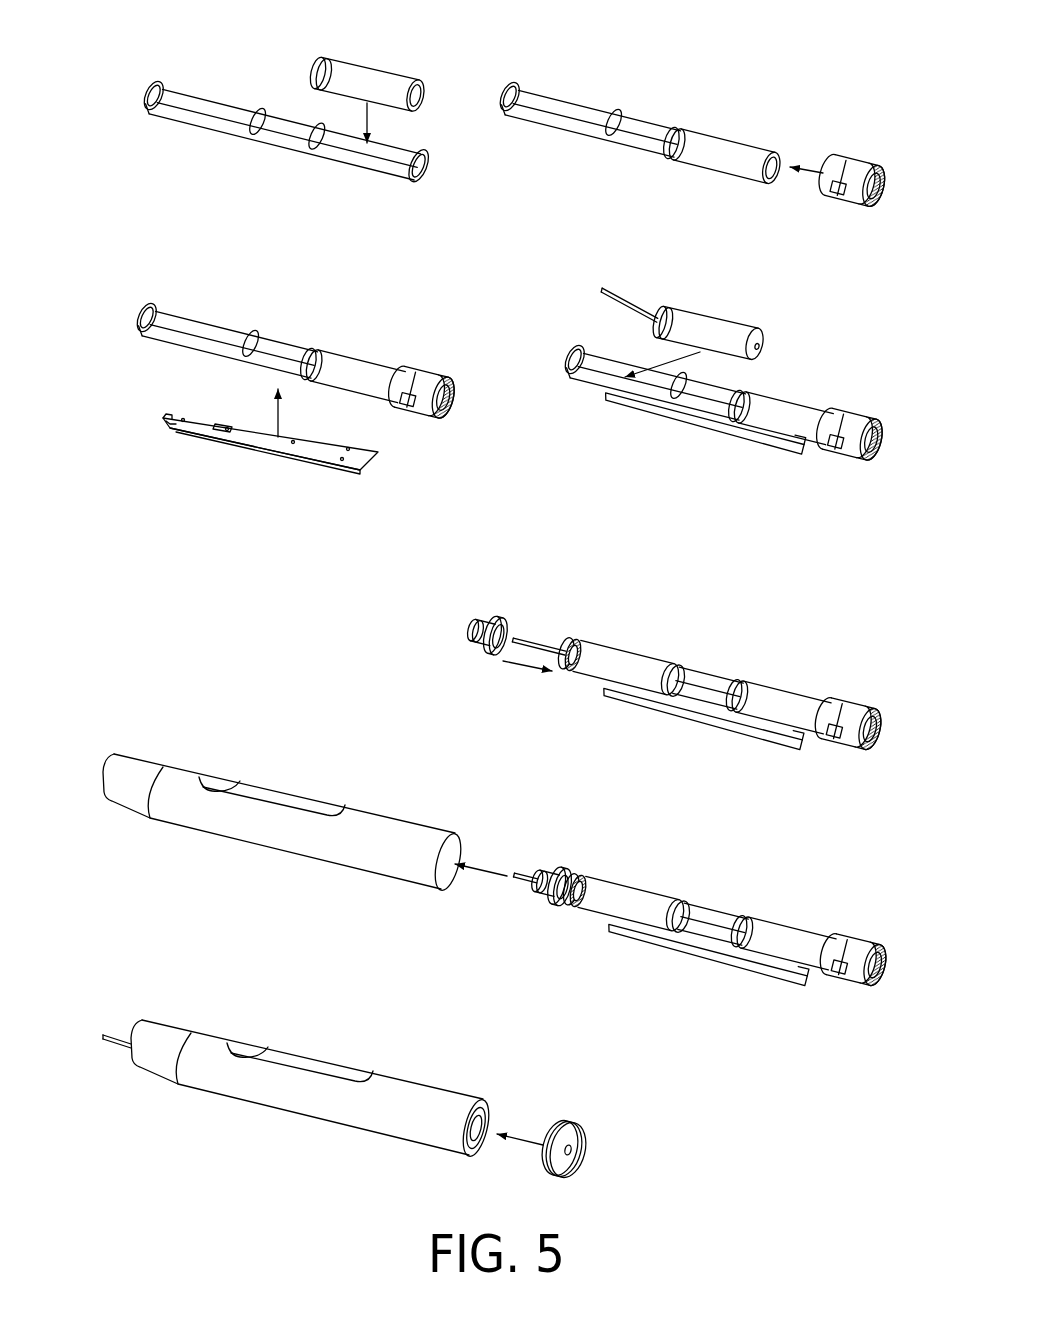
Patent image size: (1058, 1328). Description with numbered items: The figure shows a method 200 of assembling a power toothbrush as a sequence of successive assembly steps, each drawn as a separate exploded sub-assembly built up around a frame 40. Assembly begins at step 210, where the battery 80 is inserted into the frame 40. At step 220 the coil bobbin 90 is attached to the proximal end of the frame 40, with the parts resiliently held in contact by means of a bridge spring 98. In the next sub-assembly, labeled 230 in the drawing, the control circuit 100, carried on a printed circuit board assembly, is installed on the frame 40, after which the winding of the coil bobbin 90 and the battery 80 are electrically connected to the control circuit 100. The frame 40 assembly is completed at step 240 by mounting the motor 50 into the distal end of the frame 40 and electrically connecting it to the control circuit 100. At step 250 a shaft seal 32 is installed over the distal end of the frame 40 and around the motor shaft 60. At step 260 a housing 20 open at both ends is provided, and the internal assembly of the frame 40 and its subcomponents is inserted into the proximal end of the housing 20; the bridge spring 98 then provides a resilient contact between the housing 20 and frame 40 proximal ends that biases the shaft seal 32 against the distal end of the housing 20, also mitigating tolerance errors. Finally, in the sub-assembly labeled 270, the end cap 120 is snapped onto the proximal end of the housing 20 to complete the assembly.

The housing 20 is at (182, 770).
The shaft seal 32 is at (480, 628).
The frame 40 is at (196, 125).
The motor 50 is at (763, 338).
The motor shaft 60 is at (547, 650).
The battery 80 is at (317, 72).
The coil bobbin 90 is at (853, 166).
The bridge spring 98 is at (830, 177).
The control circuit 100 is at (380, 465).
The end cap 120 is at (583, 1139).
The method of assembling a power toothbrush 200 is at (887, 27).
The step 210 is at (382, 226).
The step 220 is at (767, 224).
The assembly-3 230 is at (382, 512).
The step 240 is at (767, 512).
The step 250 is at (766, 777).
The step 260 is at (550, 994).
The assembly-7 270 is at (395, 1196).